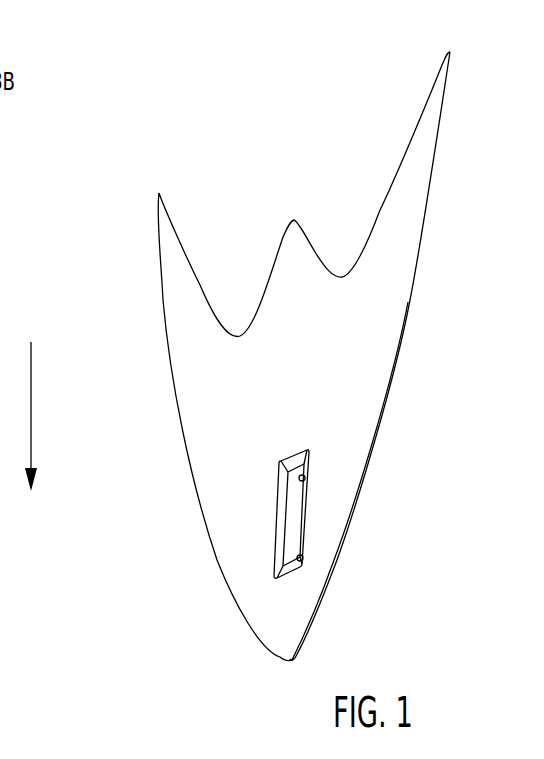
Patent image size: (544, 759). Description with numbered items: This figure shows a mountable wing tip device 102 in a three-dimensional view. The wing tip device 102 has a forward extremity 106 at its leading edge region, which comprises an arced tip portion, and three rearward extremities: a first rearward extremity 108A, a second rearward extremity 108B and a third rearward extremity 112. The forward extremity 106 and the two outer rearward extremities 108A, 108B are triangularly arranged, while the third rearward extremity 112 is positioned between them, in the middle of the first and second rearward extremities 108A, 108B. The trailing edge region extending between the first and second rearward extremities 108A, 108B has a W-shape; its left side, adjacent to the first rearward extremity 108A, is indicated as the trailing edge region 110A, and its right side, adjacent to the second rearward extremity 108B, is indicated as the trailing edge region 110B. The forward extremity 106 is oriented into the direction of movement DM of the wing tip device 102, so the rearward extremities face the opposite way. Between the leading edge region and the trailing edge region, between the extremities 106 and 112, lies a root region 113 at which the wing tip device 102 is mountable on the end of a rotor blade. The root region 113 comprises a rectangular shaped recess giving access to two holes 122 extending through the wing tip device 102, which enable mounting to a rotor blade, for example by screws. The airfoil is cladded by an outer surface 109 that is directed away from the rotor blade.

The mountable wing tip device 102 is at (297, 365).
The forward extremity 106 is at (270, 645).
The first rearward extremity 108A is at (162, 243).
The second rearward extremity 108B is at (440, 97).
The outer surface 109 is at (190, 379).
The trailing edge region (left side) 110A is at (193, 270).
The trailing edge region (right side) 110B is at (397, 177).
The third rearward extremity 112 is at (293, 220).
The root region 113 is at (281, 514).
The holes 122 is at (304, 479).
The direction of movement DM is at (31, 410).